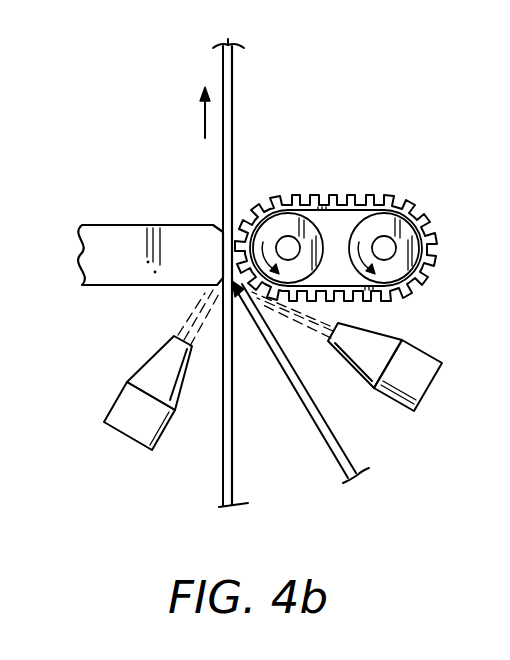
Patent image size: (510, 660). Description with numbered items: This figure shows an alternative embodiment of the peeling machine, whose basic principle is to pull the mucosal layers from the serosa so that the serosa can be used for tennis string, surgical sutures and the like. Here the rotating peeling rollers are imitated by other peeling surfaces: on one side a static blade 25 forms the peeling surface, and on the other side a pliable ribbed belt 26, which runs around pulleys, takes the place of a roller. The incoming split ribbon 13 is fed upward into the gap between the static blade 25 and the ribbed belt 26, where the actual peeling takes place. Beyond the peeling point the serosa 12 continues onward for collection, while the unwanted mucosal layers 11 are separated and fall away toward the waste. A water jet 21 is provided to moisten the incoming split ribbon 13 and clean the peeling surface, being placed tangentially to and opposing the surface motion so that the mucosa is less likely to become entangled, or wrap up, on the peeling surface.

The mucosal layers 11 is at (344, 455).
The serosa 12 is at (234, 118).
The split ribbon 13 is at (152, 453).
The water jet 21 is at (427, 358).
The static blade 25 is at (131, 242).
The pliable ribbed belt 26 is at (372, 196).